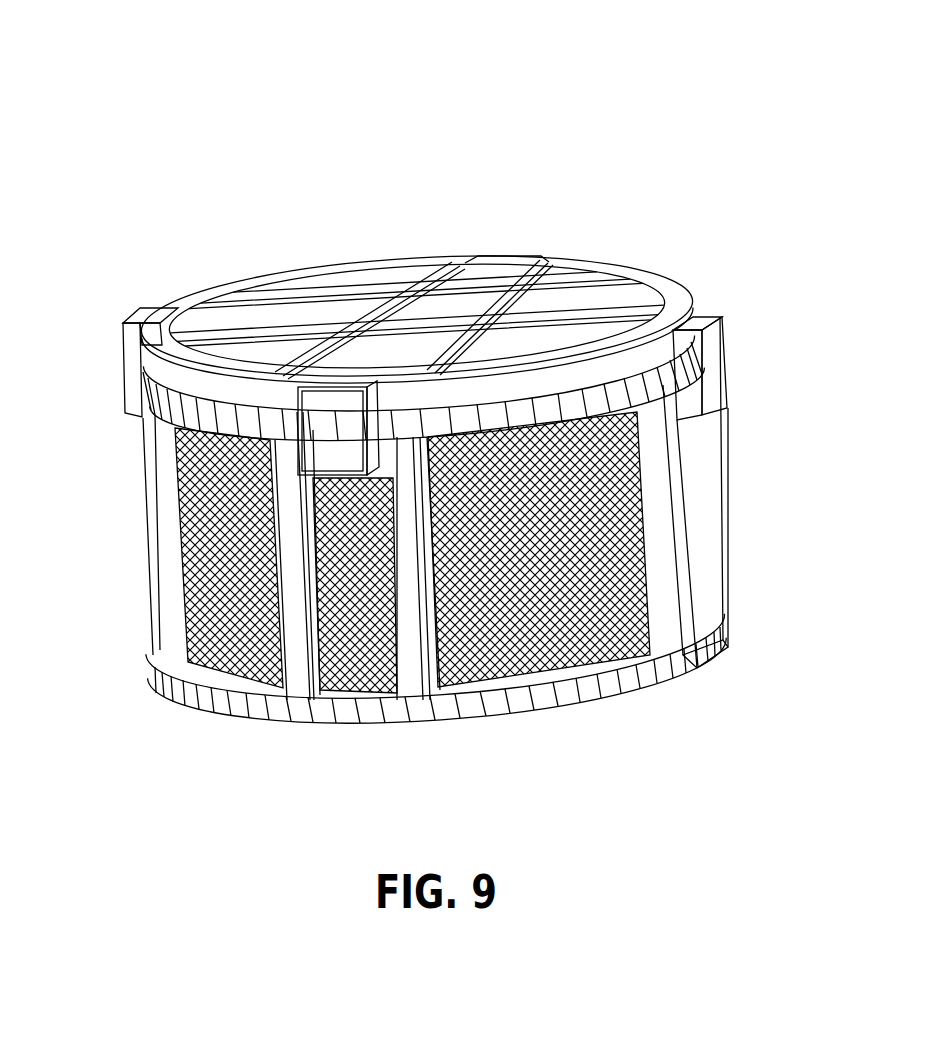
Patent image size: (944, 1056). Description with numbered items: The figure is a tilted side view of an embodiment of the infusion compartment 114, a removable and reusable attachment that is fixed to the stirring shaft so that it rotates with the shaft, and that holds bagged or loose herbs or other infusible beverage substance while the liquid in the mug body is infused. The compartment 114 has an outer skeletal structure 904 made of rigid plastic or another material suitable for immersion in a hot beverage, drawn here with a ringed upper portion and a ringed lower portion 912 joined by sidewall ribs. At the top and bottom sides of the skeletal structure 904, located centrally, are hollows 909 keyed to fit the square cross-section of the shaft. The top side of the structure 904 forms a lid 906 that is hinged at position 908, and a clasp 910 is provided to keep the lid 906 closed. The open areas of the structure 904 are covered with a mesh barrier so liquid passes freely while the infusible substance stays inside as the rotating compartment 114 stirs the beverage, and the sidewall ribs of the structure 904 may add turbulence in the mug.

The infusion compartment 114 is at (532, 158).
The skeletal structure 904 is at (308, 708).
The lid 906 is at (163, 371).
The hinge position 908 is at (150, 310).
The hollows 909 is at (418, 316).
The clasp 910 is at (723, 313).
The bottom ring 912 is at (192, 667).